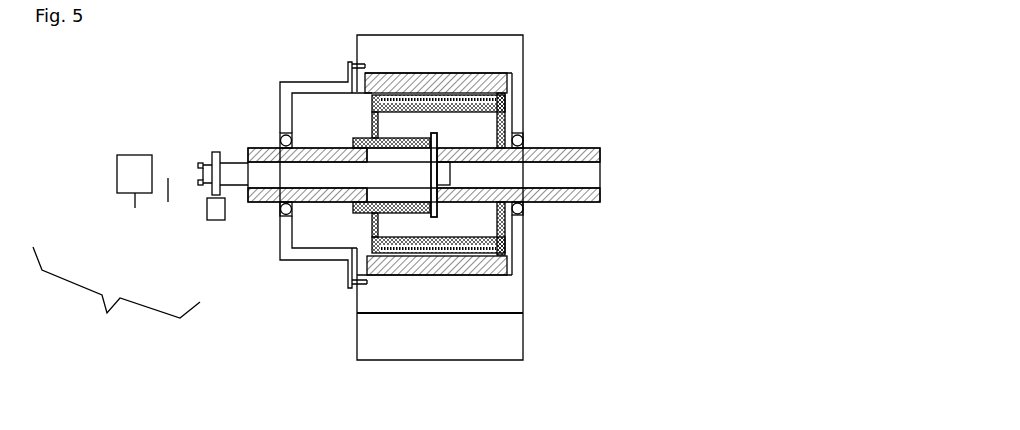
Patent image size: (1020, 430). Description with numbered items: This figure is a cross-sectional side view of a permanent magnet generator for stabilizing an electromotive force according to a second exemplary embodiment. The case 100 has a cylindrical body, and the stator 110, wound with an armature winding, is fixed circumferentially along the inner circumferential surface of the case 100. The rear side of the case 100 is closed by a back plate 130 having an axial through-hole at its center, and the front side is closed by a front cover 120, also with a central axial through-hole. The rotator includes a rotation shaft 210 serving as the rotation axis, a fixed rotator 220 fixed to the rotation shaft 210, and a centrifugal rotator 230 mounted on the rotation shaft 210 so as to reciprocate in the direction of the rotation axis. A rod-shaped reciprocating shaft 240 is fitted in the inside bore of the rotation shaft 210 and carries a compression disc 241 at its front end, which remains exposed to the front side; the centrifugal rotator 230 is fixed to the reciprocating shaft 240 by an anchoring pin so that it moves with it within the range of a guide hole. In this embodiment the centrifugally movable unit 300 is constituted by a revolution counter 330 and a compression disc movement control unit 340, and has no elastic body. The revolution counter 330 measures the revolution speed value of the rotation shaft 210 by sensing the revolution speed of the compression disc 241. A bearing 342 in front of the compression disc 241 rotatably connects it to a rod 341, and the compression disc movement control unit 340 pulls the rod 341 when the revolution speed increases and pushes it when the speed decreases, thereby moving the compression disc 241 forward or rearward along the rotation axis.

The case 100 is at (527, 297).
The stator 110 is at (507, 262).
The front cover 120 is at (278, 262).
The back plate 130 is at (523, 232).
The rotation shaft 210 is at (602, 152).
The fixed rotator 220 is at (507, 120).
The centrifugal rotator 230 is at (347, 93).
The reciprocating shaft 240 is at (303, 148).
The compression disc 241 is at (217, 152).
The centrifugally movable unit 300 is at (116, 293).
The revolution counter 330 is at (203, 205).
The compression disc movement control unit 340 is at (120, 195).
The rod 341 is at (168, 202).
The bearing 342 is at (202, 187).